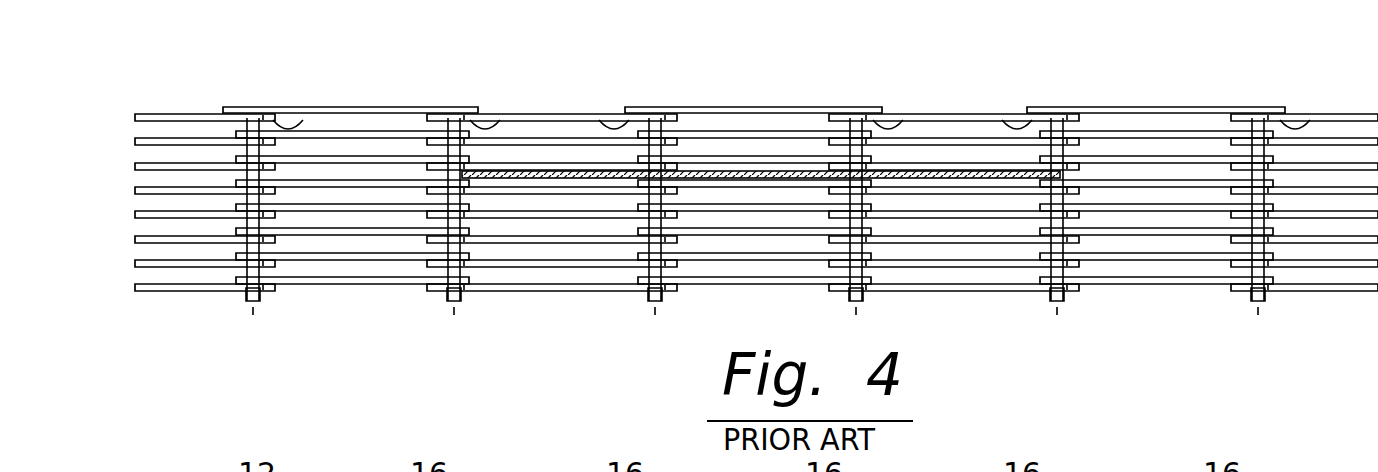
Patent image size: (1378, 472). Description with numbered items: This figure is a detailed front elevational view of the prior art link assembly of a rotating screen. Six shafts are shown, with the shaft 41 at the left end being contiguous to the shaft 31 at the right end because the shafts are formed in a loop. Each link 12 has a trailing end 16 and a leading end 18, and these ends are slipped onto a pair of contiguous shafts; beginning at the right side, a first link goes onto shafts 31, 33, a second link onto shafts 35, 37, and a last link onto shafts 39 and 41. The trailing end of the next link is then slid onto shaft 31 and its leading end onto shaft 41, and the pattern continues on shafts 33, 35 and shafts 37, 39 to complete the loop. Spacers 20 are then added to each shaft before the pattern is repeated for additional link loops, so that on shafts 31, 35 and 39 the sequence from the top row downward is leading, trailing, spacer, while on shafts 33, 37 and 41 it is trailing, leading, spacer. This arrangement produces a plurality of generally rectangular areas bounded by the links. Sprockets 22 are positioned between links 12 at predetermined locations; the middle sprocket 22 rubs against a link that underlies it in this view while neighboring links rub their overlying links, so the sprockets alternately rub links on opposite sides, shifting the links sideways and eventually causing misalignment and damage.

The link 12 is at (290, 104).
The trailing end 16 is at (304, 113).
The leading end 18 is at (227, 108).
The spacer 20 is at (851, 271).
The sprocket 22 is at (742, 170).
The shaft 31 is at (1258, 322).
The shaft 33 is at (1057, 322).
The shaft 35 is at (856, 322).
The shaft 37 is at (655, 322).
The shaft 39 is at (454, 322).
The shaft 41 is at (253, 322).